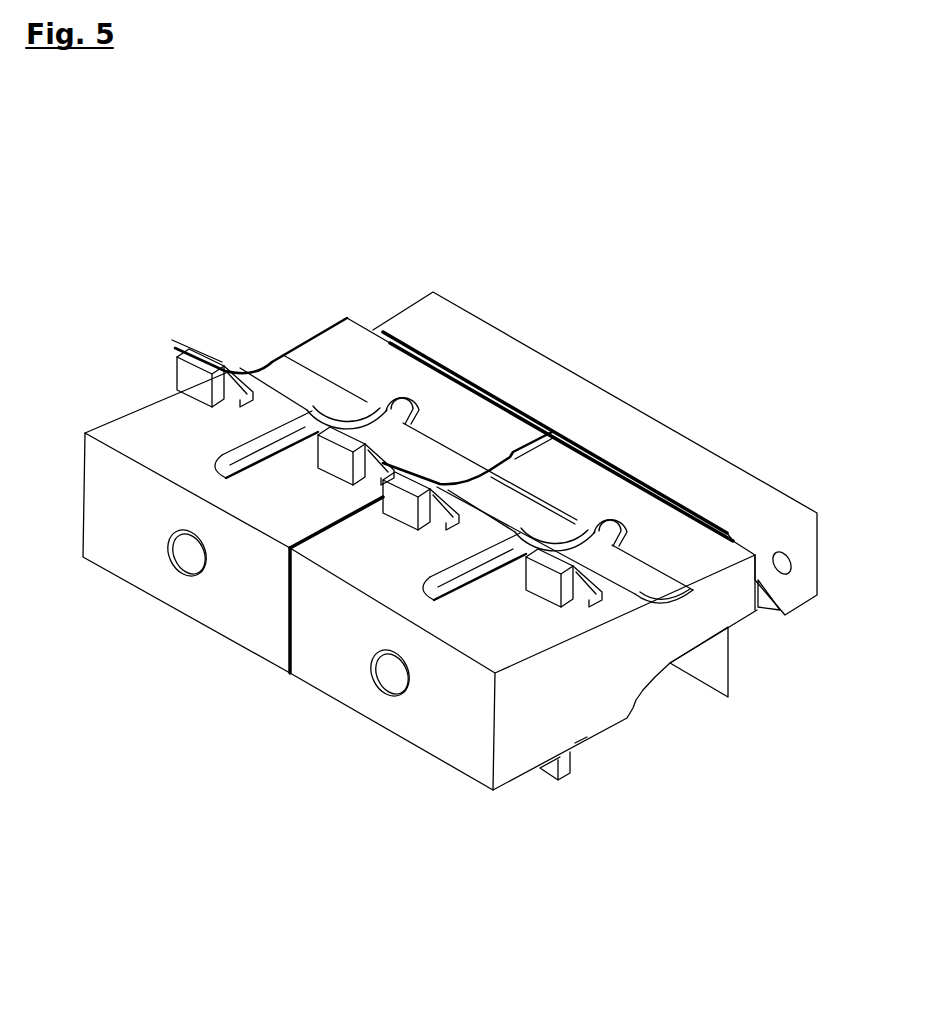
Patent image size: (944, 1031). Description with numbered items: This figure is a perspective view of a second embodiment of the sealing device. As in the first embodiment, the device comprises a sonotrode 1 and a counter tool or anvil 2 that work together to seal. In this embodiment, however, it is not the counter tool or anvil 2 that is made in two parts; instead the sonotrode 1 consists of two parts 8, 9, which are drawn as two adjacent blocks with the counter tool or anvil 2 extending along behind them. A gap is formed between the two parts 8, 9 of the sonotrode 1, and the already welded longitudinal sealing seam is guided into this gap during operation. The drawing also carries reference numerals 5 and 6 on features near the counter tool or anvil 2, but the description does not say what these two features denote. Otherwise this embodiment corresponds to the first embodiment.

The sonotrode 1 is at (340, 707).
The counter tool or anvil 2 is at (498, 330).
The contact strip 5 is at (552, 432).
The slot 6 is at (397, 340).
The part of the sonotrode 8 is at (107, 543).
The part of the sonotrode 9 is at (444, 738).